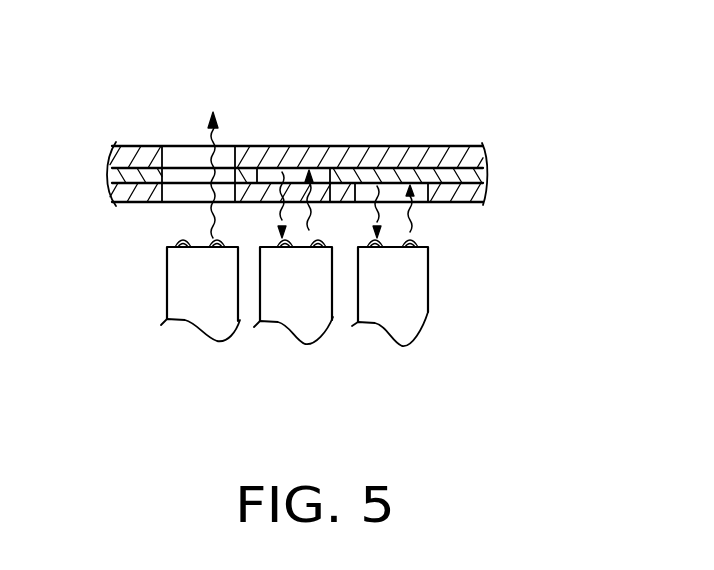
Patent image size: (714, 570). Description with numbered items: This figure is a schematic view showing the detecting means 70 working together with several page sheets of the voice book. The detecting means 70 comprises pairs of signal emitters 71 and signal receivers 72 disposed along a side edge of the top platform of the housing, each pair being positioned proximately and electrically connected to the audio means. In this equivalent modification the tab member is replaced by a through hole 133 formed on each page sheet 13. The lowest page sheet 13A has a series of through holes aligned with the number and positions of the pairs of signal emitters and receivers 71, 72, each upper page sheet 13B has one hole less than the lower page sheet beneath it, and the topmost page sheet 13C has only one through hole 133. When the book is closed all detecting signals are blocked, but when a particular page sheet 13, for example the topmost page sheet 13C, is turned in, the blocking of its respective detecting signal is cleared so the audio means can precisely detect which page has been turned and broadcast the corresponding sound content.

The page sheet 13 is at (371, 122).
The lowest page sheet 13A is at (487, 193).
The upper page sheet 13B is at (485, 176).
The topmost page sheet 13C is at (482, 148).
The through hole 133 is at (190, 146).
The detecting means 70 is at (141, 278).
The signal emitter 71 is at (219, 248).
The signal receiver 72 is at (185, 248).